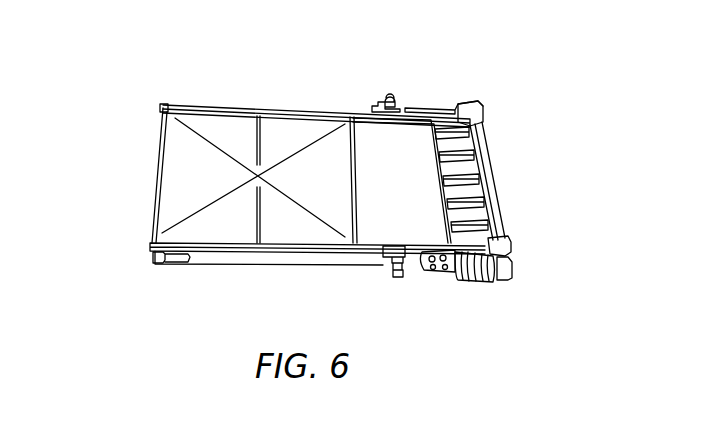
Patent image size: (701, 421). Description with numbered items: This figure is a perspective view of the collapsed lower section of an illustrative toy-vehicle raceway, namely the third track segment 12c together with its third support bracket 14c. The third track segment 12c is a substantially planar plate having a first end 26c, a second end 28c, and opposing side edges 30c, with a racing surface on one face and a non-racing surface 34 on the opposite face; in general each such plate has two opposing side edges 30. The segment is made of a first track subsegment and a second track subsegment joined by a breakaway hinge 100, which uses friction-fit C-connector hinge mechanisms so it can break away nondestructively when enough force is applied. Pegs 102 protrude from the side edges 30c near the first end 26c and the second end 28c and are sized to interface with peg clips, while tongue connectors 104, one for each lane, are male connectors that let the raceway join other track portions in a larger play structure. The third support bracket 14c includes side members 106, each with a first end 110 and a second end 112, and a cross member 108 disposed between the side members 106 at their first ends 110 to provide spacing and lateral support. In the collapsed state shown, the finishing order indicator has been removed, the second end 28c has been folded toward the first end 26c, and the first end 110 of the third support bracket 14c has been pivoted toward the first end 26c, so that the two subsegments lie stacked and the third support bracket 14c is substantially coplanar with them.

The third track segment 12c is at (176, 72).
The side edges 30 is at (215, 108).
The non-racing surface 34 is at (281, 126).
The side edges 30c is at (255, 256).
The hinge 100 is at (157, 264).
The pegs 102 is at (389, 97).
The side members 106 is at (430, 104).
The tongue connectors 104 is at (466, 164).
The first end 26c is at (514, 139).
The cross member 108 is at (493, 185).
The second end 28c is at (516, 223).
The first end 110 is at (526, 265).
The third support bracket 14c is at (489, 276).
The second end 112 is at (414, 287).